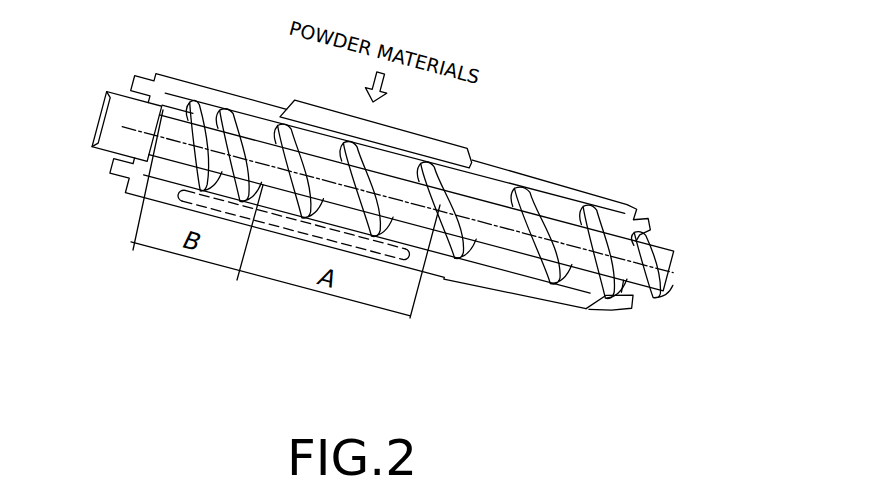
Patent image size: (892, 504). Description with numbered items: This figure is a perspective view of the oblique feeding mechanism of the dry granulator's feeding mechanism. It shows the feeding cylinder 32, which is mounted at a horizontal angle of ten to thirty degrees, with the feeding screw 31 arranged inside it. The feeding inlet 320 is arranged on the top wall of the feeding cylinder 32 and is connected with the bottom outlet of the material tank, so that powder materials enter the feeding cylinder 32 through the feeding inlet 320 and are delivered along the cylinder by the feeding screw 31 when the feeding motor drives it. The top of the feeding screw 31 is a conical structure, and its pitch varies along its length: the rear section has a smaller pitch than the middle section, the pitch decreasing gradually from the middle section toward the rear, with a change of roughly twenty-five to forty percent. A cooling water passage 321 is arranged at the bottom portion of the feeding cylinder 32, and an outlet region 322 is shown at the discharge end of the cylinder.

The feeding screw 31 is at (540, 192).
The feeding cylinder 32 is at (510, 177).
The feeding inlet 320 is at (440, 157).
The cooling water passage 321 is at (370, 250).
The outlet at housing end 322 is at (592, 305).